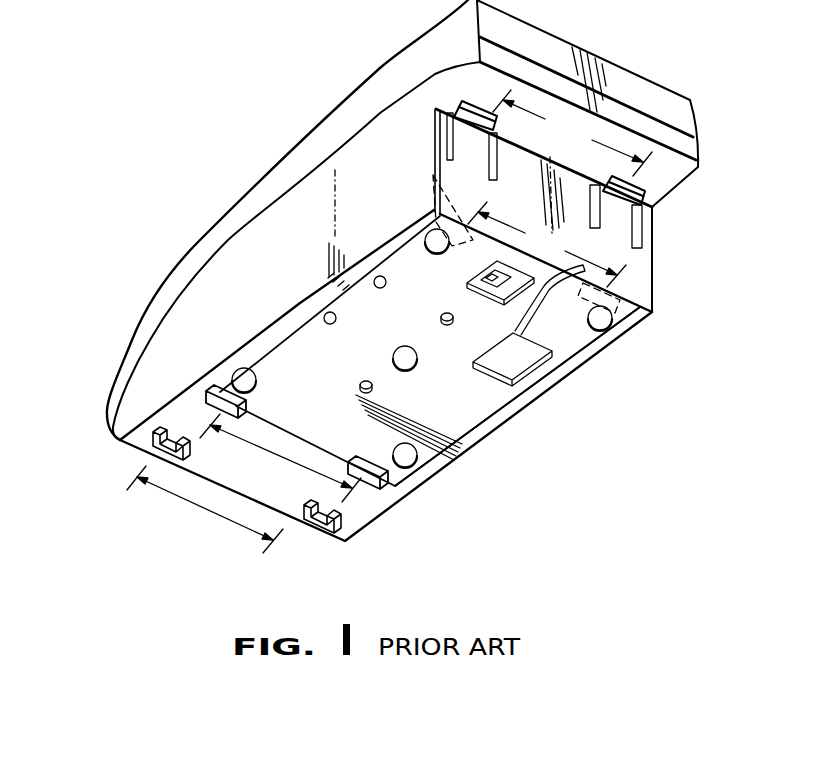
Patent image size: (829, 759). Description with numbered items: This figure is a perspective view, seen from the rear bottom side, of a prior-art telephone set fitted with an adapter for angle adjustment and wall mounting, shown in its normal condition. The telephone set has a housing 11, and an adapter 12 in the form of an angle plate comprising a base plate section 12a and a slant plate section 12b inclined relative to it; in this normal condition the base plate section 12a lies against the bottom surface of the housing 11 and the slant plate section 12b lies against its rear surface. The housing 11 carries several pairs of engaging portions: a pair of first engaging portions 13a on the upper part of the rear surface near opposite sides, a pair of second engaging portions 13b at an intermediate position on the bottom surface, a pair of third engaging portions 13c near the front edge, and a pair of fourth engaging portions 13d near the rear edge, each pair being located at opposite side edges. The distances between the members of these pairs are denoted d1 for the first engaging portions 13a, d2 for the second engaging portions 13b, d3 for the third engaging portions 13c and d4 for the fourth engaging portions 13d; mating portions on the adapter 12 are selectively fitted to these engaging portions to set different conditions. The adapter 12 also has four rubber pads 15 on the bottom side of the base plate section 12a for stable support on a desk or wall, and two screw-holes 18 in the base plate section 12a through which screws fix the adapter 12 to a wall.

The housing 11 is at (237, 217).
The adapter 12 is at (478, 392).
The base plate section 12a is at (477, 413).
The slant plate section 12b is at (630, 266).
The first engaging portions 13a is at (460, 103).
The second engaging portions 13b is at (210, 396).
The third engaging portions 13c is at (152, 440).
The fourth engaging portions 13d is at (433, 175).
The rubber pads 15 is at (607, 310).
The screw-holes 18 is at (447, 313).
The distance between first engaging portions d1 is at (572, 133).
The distance between second engaging portions d2 is at (280, 458).
The distance between third engaging portions d3 is at (205, 509).
The distance between fourth engaging portions d4 is at (547, 244).